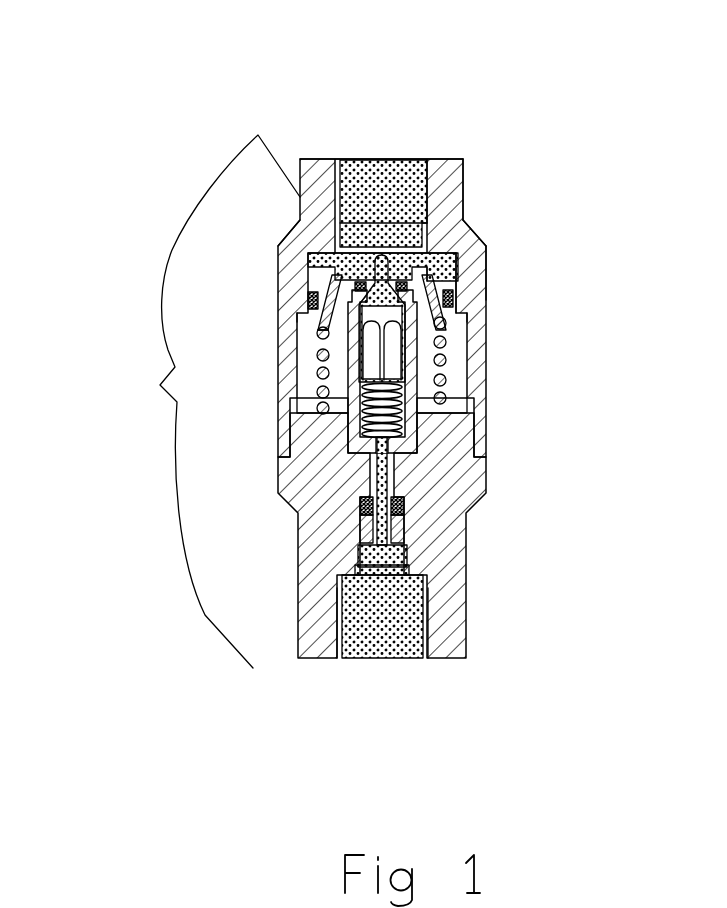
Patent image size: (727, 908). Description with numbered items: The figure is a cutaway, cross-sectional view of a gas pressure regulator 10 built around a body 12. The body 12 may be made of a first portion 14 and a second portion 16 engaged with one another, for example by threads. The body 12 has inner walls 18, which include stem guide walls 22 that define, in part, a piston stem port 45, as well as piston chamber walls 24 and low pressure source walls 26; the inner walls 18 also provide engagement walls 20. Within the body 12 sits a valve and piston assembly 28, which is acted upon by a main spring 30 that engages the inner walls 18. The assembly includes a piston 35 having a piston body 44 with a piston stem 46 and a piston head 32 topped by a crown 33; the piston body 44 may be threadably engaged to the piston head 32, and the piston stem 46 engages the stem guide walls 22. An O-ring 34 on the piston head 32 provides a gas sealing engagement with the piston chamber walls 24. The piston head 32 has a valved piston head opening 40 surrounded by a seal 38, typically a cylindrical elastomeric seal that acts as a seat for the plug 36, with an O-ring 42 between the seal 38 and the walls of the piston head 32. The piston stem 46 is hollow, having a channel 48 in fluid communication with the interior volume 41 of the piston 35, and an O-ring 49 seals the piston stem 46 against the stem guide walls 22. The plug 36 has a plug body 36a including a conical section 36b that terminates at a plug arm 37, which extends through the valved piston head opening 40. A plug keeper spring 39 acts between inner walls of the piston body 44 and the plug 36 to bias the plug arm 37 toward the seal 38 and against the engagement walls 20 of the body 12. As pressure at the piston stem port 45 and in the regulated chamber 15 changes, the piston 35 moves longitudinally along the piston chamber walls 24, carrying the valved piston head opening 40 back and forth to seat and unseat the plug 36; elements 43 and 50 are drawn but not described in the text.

The gas pressure regulator 10 is at (387, 125).
The body 12 is at (213, 401).
The first portion 14 is at (466, 566).
The regulated chamber 15 is at (310, 250).
The second portion 16 is at (415, 258).
The inner walls 18 is at (318, 405).
The engagement walls 20 is at (382, 284).
The stem guide walls 22 is at (470, 524).
The piston chamber walls 24 is at (455, 206).
The low pressure source walls 26 is at (412, 190).
The valve and piston assembly 28 is at (310, 407).
The main spring 30 is at (417, 350).
The piston head 32 is at (325, 248).
The crown 33 is at (364, 272).
The O-ring 34 is at (306, 298).
The piston 35 is at (454, 304).
The plug 36 is at (300, 340).
The plug body 36a is at (310, 376).
The conical section 36b is at (300, 333).
The plug arm 37 is at (463, 220).
The seal 38 is at (455, 299).
The plug keeper spring 39 is at (403, 408).
The valved piston head opening 40 is at (436, 272).
The interior volume 41 is at (406, 290).
The O-ring 42 is at (300, 220).
The cap wall 43 is at (458, 258).
The piston body 44 is at (412, 443).
The piston stem port 45 is at (409, 552).
The piston stem 46 is at (377, 472).
The channel 48 is at (404, 505).
The O-ring 49 is at (404, 530).
The plug 50 is at (368, 232).